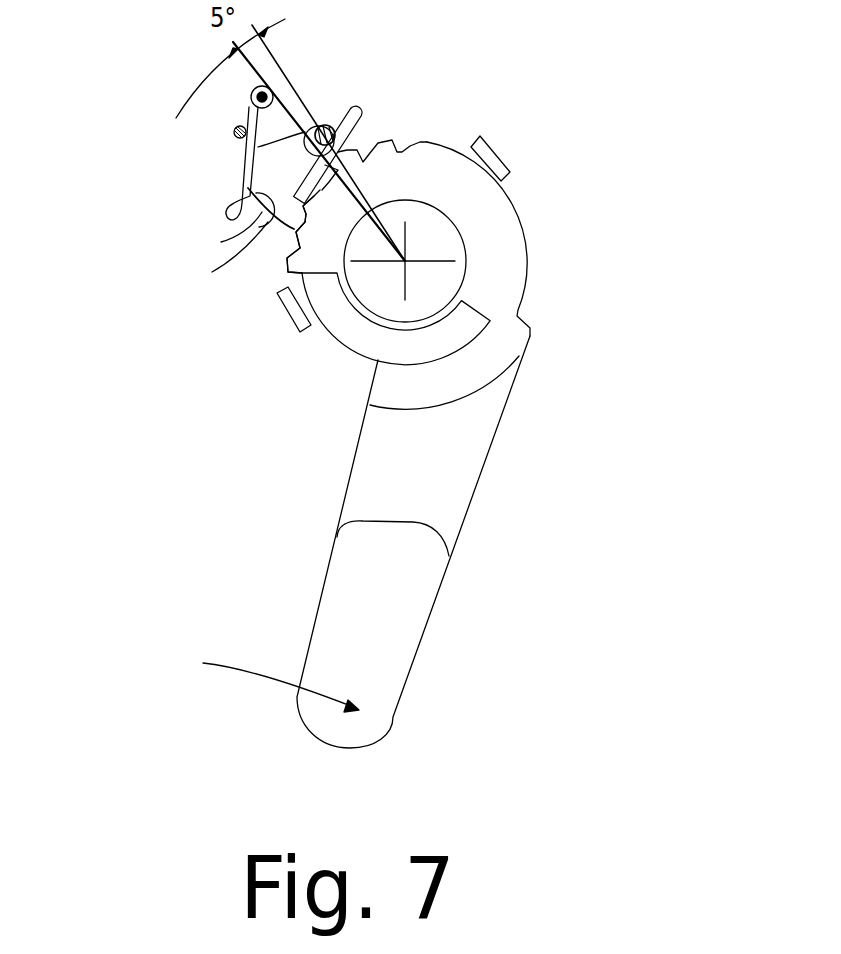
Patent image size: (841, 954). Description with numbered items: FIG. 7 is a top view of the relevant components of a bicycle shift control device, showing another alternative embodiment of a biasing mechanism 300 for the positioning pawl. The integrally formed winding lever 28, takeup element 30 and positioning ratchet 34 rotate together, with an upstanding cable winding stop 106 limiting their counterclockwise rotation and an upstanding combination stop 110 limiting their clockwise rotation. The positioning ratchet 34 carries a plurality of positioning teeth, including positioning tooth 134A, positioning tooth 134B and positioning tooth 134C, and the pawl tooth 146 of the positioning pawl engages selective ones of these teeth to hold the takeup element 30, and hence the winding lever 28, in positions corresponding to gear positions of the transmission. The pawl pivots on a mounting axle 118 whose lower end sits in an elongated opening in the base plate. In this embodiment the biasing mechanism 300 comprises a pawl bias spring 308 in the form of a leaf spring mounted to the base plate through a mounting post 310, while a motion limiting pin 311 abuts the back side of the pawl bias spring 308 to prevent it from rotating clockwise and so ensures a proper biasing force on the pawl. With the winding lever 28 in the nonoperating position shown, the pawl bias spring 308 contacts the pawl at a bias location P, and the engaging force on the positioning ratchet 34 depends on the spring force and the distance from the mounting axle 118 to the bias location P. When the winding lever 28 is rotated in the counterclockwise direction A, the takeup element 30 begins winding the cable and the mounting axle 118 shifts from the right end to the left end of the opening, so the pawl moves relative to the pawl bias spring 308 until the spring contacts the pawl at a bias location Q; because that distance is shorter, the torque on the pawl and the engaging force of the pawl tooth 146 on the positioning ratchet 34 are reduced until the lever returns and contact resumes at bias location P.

The winding lever 28 is at (460, 482).
The takeup element 30 is at (524, 228).
The positioning ratchet 34 is at (383, 127).
The cable winding stop 106 is at (498, 156).
The combination stop 110 is at (287, 313).
The mounting axle 118 is at (326, 126).
The positioning tooth 134A is at (288, 262).
The positioning tooth 134B is at (298, 230).
The positioning tooth 134C is at (305, 206).
The pawl tooth 146 is at (268, 228).
The biasing mechanism 300 is at (169, 207).
The pawl bias spring 308 is at (247, 150).
The mounting post 310 is at (251, 97).
The motion limiting pin 311 is at (234, 130).
The bias location P is at (235, 235).
The bias location Q is at (229, 257).
The counterclockwise direction A is at (281, 695).